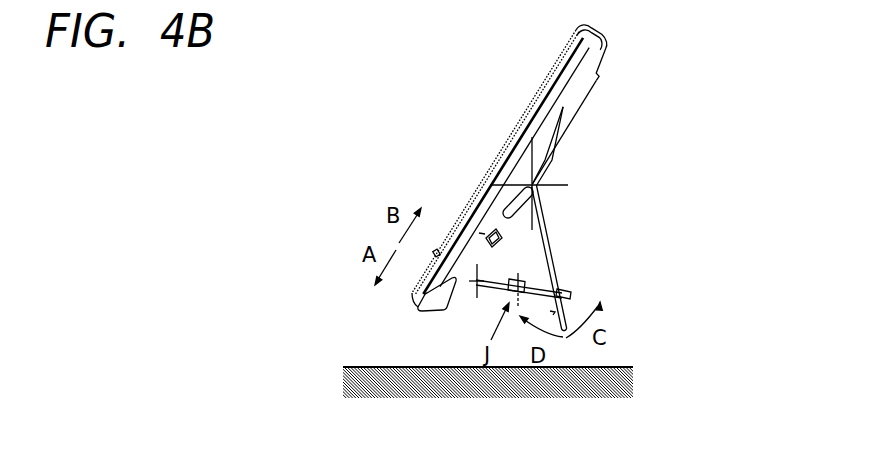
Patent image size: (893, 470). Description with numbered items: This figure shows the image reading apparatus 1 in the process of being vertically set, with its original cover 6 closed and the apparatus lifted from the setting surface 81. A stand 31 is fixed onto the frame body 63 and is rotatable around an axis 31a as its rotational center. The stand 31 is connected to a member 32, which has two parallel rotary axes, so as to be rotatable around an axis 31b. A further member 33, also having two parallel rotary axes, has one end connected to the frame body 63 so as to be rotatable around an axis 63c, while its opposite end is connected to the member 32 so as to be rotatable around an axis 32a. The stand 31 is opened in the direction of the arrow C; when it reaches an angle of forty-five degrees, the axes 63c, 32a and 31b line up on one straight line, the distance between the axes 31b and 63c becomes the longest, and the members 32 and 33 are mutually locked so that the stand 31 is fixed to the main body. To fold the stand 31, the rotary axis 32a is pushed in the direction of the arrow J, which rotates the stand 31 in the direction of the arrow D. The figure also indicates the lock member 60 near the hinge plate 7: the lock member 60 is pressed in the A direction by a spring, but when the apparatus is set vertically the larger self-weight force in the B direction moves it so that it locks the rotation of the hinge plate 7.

The electronic device / tablet body 1 is at (601, 77).
The original cover 6 is at (552, 68).
The hinge plate 7 is at (434, 251).
The stand 31 is at (546, 235).
The axis 31a is at (547, 174).
The axis 31b is at (560, 290).
The member 32 is at (572, 293).
The rotary axis 32a is at (500, 289).
The member 33 is at (468, 290).
The lock member 60 is at (425, 303).
The frame body 63 is at (574, 117).
The axis 63c is at (477, 268).
The setting surface 81 is at (618, 367).